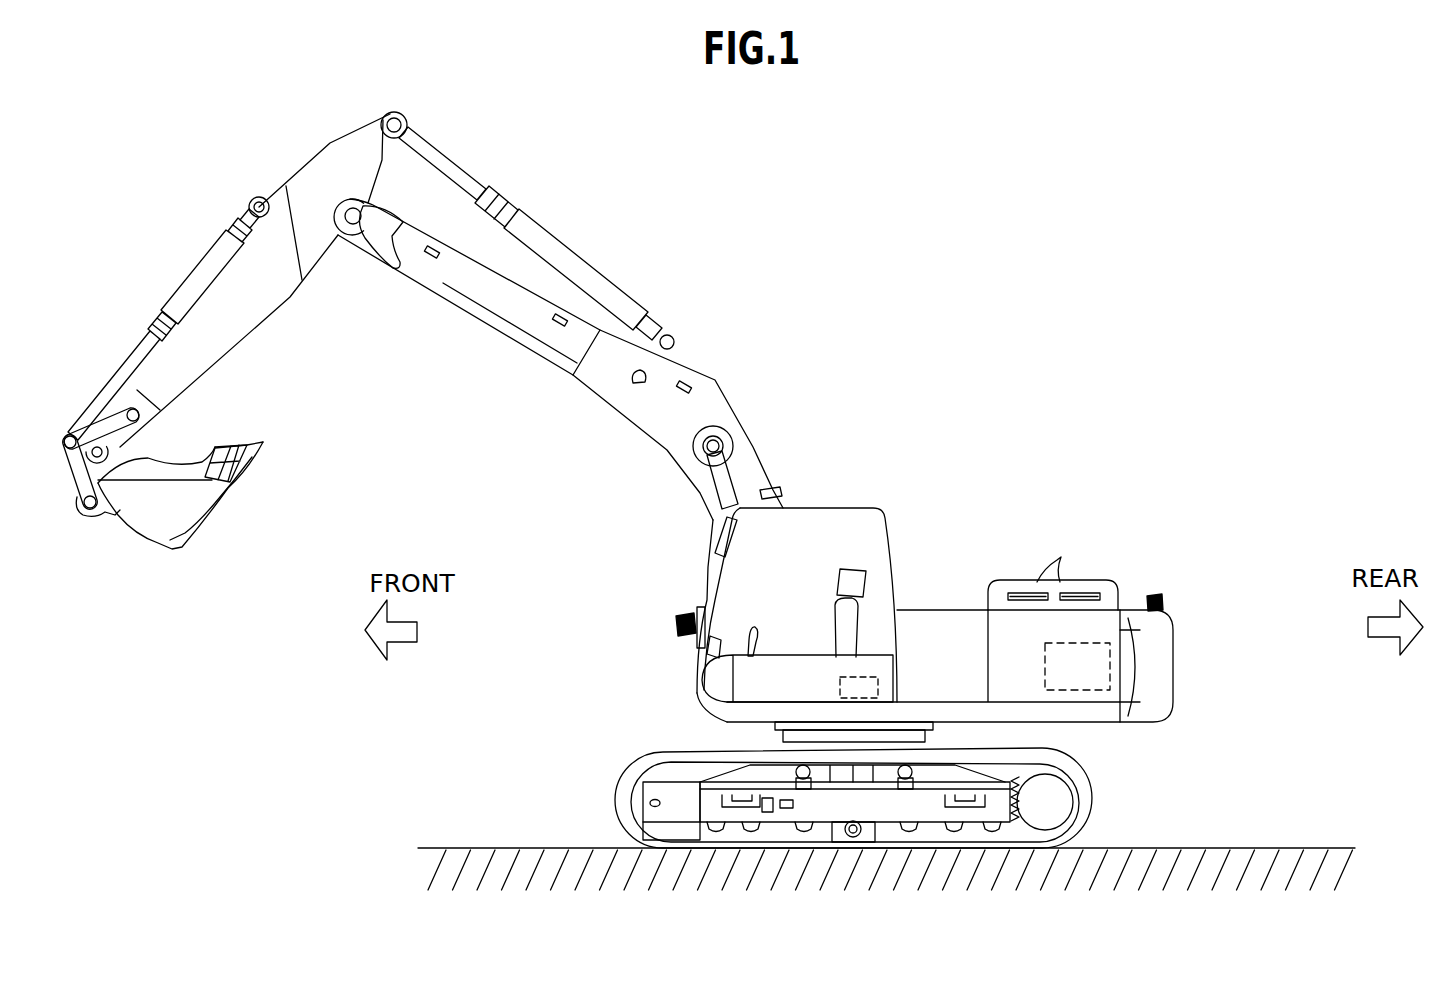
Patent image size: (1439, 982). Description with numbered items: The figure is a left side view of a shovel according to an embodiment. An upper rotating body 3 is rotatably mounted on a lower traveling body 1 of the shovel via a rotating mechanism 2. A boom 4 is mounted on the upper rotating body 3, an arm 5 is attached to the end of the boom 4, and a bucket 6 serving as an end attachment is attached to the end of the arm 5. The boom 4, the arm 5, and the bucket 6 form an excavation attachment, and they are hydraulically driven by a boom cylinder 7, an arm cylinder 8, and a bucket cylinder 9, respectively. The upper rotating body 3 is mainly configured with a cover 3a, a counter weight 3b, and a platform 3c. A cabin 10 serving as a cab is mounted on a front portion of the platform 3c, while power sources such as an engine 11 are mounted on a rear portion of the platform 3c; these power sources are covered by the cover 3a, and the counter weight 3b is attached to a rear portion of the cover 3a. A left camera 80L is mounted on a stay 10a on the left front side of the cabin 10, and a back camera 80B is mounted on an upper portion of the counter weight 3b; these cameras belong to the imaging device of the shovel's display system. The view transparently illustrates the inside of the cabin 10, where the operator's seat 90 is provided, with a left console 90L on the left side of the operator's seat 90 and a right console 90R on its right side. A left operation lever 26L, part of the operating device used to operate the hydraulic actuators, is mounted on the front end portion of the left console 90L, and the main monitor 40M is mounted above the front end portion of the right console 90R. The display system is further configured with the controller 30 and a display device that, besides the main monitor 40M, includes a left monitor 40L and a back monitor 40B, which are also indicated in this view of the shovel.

The lower traveling body 1 is at (617, 797).
The rotating mechanism 2 is at (800, 730).
The upper rotating body 3 is at (1192, 648).
The cover 3a is at (960, 627).
The counter weight 3b is at (1165, 685).
The platform 3c is at (717, 717).
The boom 4 is at (610, 397).
The arm 5 is at (267, 297).
The bucket 6 is at (158, 543).
The boom cylinder 7 is at (725, 487).
The arm cylinder 8 is at (598, 282).
The bucket cylinder 9 is at (198, 280).
The cabin 10 is at (873, 505).
The stay 10a is at (707, 578).
The engine 11 is at (1097, 643).
The left operation lever 26L is at (753, 640).
The controller 30 is at (870, 677).
The back monitor 40B is at (772, 488).
The left monitor 40L is at (697, 640).
The main monitor 40M is at (713, 653).
The left camera 80L is at (677, 618).
The back camera 80B is at (1155, 597).
The operator's seat 90 is at (852, 568).
The left console 90L is at (818, 688).
The right console 90R is at (722, 688).